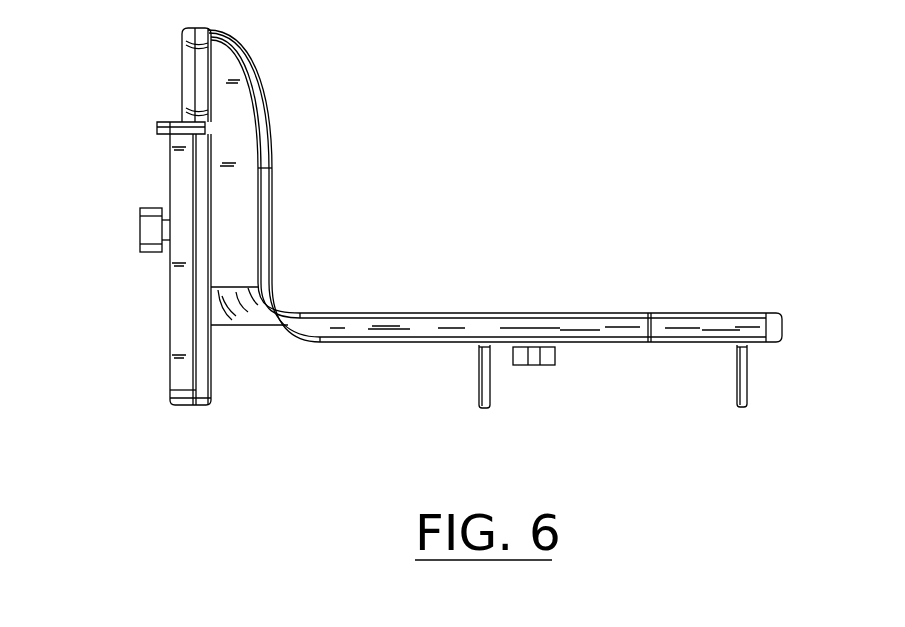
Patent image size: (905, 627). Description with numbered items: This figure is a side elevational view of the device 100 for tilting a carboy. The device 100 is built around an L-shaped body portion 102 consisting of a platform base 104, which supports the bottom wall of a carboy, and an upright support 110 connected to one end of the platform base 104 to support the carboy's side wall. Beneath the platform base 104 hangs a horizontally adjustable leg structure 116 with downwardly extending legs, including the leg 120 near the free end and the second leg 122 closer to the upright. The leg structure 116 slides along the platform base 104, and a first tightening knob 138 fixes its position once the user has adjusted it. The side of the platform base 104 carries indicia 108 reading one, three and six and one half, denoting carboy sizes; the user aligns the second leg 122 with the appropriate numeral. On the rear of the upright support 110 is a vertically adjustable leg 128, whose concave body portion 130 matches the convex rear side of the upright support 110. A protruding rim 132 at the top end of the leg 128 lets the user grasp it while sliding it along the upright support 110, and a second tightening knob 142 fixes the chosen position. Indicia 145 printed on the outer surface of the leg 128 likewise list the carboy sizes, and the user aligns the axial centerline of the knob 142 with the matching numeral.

The device for tilting a carboy 100 is at (640, 487).
The L-shaped body portion 102 is at (272, 188).
The platform base 104 is at (655, 326).
The indicia 108 is at (360, 313).
The upright support 110 is at (233, 125).
The horizontally adjustable leg structure 116 is at (658, 348).
The downwardly extending leg 120 is at (743, 380).
The second leg 122 is at (483, 380).
The vertically adjustable leg 128 is at (168, 400).
The concave body portion 130 is at (178, 273).
The protruding rim 132 is at (165, 126).
The first tightening knob 138 is at (525, 357).
The second tightening knob 142 is at (148, 208).
The indicia 145 is at (170, 291).